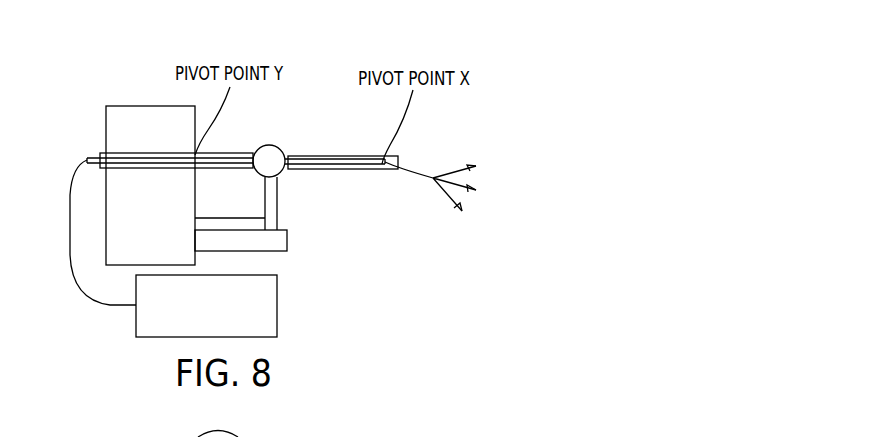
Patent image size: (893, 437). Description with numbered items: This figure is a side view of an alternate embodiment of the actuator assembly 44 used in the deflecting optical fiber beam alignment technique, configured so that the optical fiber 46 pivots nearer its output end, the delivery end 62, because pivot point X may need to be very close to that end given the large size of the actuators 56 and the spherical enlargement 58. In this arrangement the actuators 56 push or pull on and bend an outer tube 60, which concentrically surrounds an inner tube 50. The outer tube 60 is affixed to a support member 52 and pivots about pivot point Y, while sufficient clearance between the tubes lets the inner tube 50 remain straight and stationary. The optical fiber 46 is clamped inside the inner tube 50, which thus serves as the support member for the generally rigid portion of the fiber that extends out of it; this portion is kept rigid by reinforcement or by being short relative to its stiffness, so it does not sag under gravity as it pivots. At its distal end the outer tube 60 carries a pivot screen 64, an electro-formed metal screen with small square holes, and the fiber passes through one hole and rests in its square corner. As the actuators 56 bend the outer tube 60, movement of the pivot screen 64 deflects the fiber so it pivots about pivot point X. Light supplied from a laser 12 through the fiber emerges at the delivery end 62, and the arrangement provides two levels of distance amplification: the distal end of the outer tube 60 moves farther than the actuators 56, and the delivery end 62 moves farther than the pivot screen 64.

The laser 12 is at (277, 298).
The actuator assembly 44 is at (318, 32).
The optical fiber 46 is at (68, 212).
The tube 50 is at (90, 157).
The support member 52 is at (145, 120).
The actuators 56 is at (277, 188).
The spherical enlargement 58 is at (279, 147).
The outer tube 60 is at (330, 157).
The delivery end 62 is at (433, 178).
The pivot screen 64 is at (400, 172).